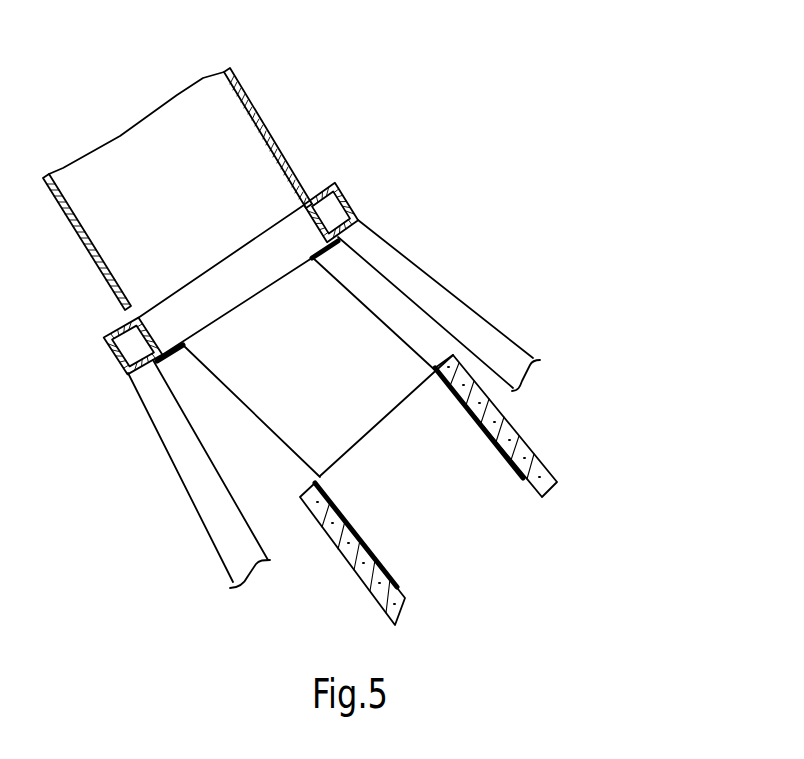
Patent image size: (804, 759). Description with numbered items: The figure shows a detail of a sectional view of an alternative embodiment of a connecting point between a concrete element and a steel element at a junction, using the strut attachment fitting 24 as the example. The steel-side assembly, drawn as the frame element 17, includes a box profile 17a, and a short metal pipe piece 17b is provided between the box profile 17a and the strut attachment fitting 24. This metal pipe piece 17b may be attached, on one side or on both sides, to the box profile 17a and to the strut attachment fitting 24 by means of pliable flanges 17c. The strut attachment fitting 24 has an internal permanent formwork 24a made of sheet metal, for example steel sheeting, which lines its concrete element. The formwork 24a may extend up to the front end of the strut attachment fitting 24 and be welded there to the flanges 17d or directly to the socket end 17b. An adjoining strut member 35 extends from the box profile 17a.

The panel 17 is at (265, 122).
The upper tubular bracket of panel 17a is at (347, 193).
The plate portion of panel 17b is at (250, 410).
The lower tubular bracket of panel 17c is at (178, 348).
The edge of plate portion 17d is at (318, 480).
The hatched rail 24 is at (510, 440).
The inner wall of rail 24a is at (512, 466).
The arm 35 is at (463, 312).